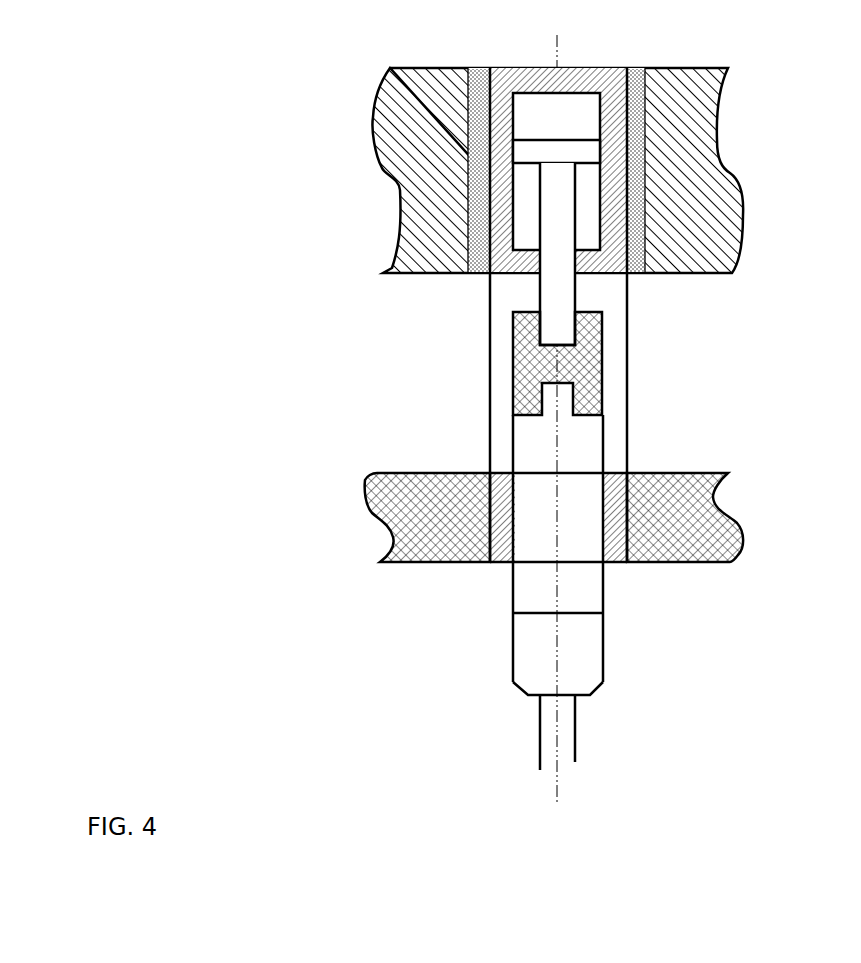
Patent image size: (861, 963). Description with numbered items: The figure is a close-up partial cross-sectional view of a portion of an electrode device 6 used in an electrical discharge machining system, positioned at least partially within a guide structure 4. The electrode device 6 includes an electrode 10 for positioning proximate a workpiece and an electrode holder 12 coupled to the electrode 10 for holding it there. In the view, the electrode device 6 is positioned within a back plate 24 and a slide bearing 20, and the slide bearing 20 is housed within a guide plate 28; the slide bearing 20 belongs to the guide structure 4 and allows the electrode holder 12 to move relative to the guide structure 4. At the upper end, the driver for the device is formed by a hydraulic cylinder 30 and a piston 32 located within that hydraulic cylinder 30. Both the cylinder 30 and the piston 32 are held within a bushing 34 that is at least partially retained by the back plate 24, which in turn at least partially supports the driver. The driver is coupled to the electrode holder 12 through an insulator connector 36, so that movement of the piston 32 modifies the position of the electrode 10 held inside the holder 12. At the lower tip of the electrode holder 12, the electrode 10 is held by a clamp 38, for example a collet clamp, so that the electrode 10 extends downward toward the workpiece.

The guide structure 4 is at (342, 128).
The electrode device 6 is at (198, 117).
The electrode 10 is at (567, 737).
The electrode holder 12 is at (583, 445).
The slide bearing 20 is at (503, 490).
The back plate 24 is at (407, 212).
The guide plate 28 is at (680, 527).
The hydraulic cylinder 30 is at (613, 112).
The piston 32 is at (557, 202).
The bushing 34 is at (633, 147).
The insulator connector 36 is at (580, 357).
The clamp 38 is at (580, 642).